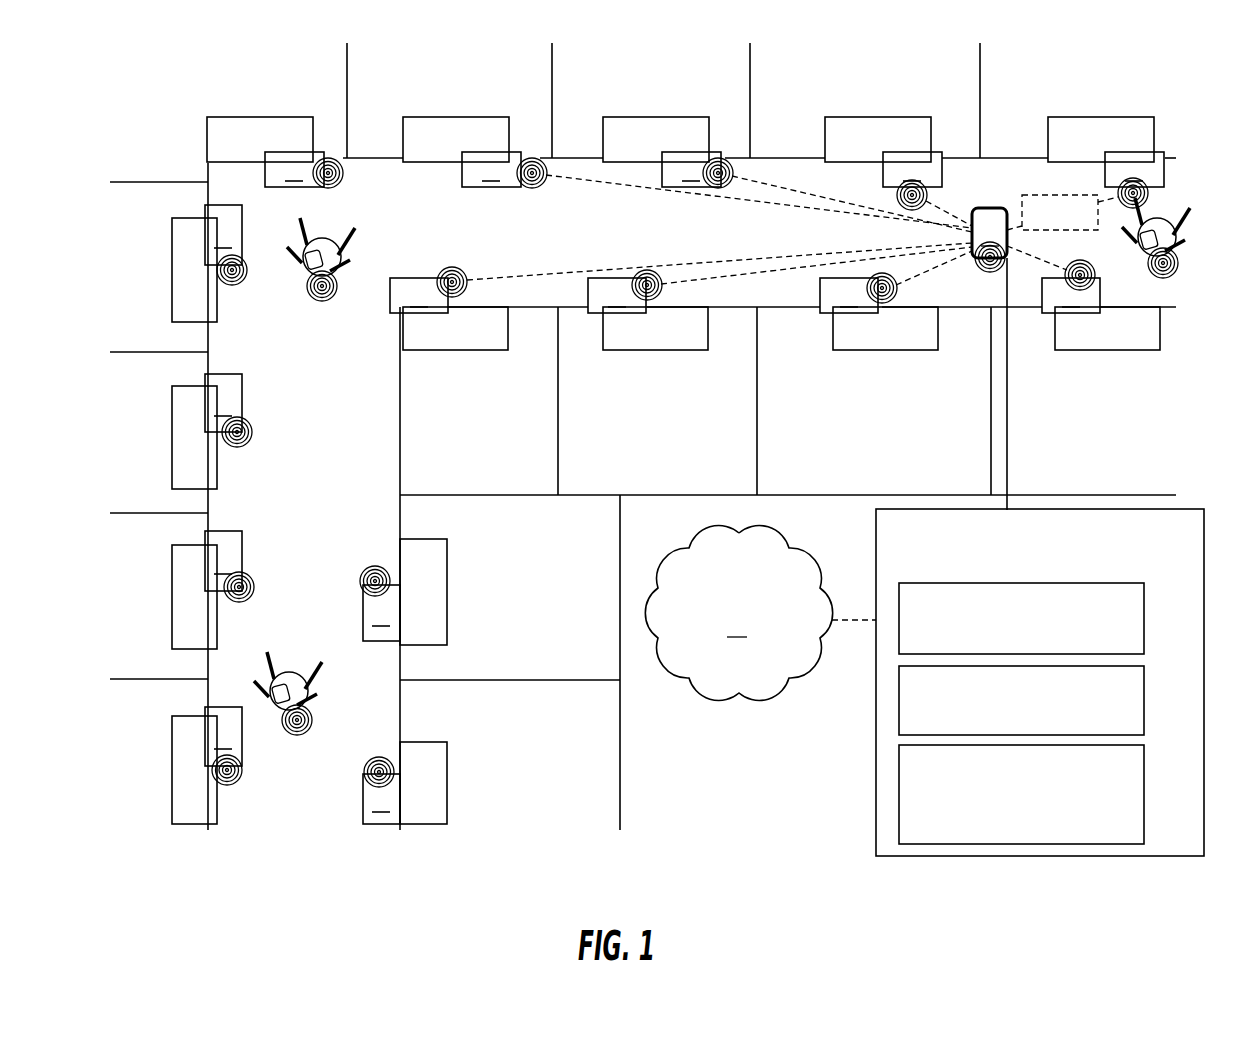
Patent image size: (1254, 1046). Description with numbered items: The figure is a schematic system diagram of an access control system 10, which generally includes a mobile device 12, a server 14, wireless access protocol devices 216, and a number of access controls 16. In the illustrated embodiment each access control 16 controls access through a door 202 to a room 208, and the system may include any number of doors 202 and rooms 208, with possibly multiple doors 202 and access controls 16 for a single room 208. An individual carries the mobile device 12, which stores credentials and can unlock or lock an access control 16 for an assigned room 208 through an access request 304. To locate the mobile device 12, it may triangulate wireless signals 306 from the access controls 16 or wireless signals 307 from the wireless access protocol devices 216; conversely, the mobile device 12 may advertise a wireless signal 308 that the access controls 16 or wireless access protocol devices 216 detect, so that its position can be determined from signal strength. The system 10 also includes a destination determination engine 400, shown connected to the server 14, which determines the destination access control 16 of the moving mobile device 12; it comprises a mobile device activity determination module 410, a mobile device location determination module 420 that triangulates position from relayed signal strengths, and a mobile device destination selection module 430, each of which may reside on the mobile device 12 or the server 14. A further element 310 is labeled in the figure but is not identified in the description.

The access control system 10 is at (136, 96).
The mobile device 12 is at (792, 230).
The server 14 is at (760, 613).
The access control 16 is at (684, 488).
The door 202 is at (223, 117).
The room 208 is at (279, 83).
The wireless access protocol device 216 is at (319, 243).
The access request 304 is at (1032, 195).
The wireless signals 306 is at (344, 175).
The wireless signals 307 is at (324, 300).
The wireless signal 308 is at (990, 275).
The destination room 310 is at (837, 407).
The destination determination engine 400 is at (963, 509).
The mobile device activity determination module 410 is at (1146, 627).
The mobile device location determination module 420 is at (1146, 701).
The mobile device destination selection module 430 is at (1146, 779).